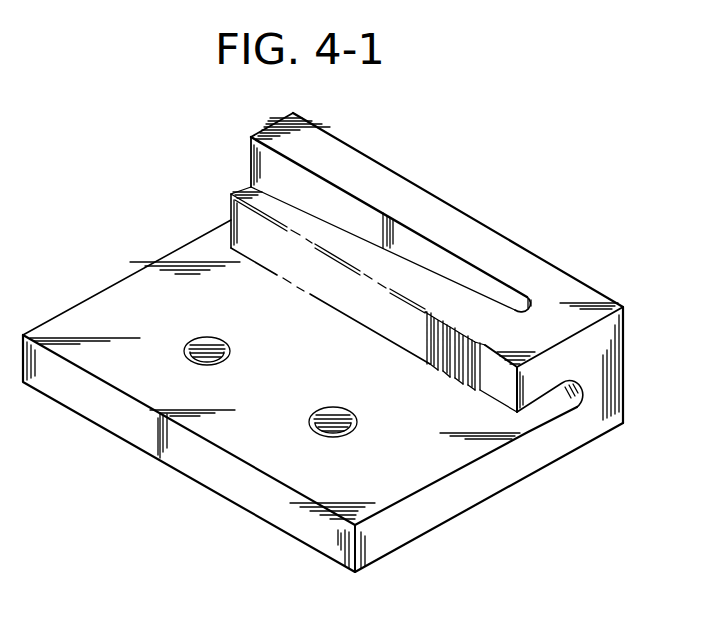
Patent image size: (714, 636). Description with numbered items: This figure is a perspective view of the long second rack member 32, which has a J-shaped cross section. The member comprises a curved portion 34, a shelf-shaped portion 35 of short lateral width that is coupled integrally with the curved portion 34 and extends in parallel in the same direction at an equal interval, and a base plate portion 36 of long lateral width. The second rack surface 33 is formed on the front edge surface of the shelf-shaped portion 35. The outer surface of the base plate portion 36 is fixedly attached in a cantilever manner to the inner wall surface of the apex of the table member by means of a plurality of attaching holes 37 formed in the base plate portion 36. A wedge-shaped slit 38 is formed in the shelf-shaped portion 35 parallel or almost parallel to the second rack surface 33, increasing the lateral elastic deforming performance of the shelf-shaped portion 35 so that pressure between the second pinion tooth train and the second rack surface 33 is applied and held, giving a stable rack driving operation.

The second rack member 32 is at (348, 327).
The second rack surface 33 is at (438, 366).
The curved portion 34 is at (600, 384).
The shelf-shaped portion 35 is at (531, 352).
The base plate portion 36 is at (386, 486).
The attaching holes 37 is at (330, 407).
The wedge-shaped slit 38 is at (263, 167).